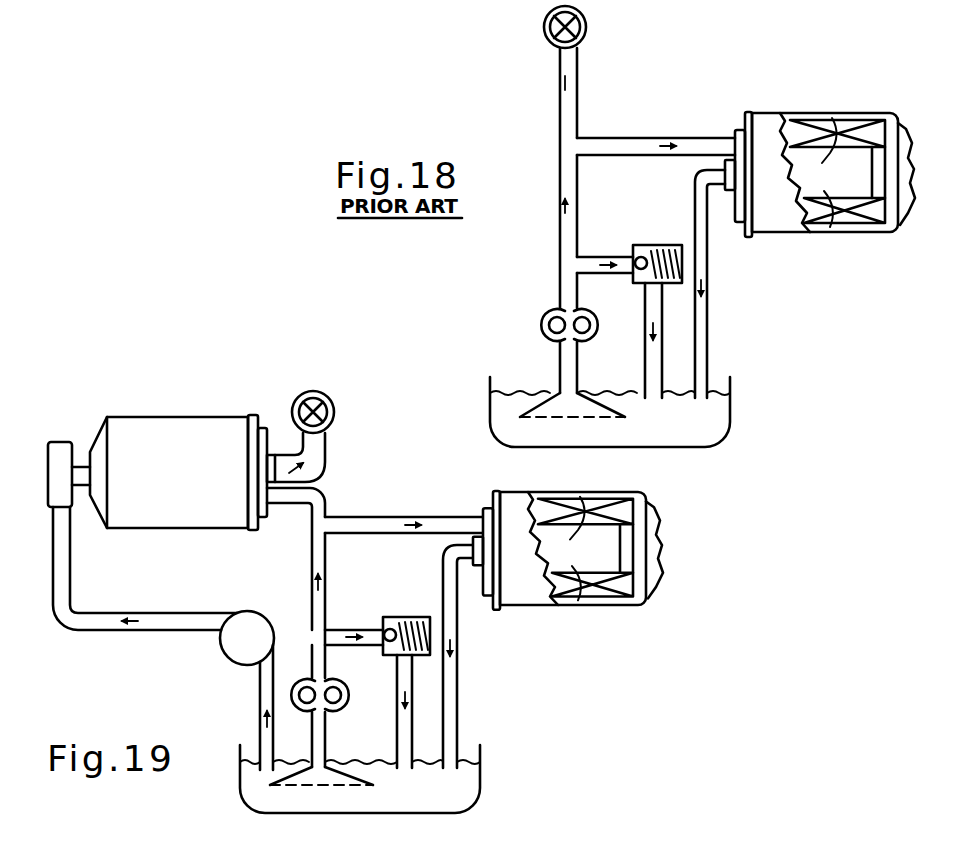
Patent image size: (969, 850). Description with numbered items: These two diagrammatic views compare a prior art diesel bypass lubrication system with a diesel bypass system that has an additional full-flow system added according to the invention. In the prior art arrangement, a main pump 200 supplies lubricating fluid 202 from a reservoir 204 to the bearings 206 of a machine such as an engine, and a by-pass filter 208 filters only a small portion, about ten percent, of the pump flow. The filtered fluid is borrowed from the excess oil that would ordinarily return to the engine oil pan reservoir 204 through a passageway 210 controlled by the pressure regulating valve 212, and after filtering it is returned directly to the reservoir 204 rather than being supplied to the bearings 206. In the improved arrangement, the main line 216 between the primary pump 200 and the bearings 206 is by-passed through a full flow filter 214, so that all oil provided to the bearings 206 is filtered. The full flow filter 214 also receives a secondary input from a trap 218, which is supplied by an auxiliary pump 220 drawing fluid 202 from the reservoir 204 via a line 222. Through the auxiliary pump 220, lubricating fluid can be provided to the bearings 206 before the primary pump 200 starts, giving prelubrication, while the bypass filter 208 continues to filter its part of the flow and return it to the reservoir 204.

In FIG. 18, the main pump 200 is at (541, 322).
In FIG. 19, the main pump 200 is at (344, 701).
In FIG. 18, the lubricating fluid 202 is at (720, 413).
In FIG. 19, the lubricating fluid 202 is at (462, 785).
In FIG. 18, the reservoir 204 is at (733, 388).
In FIG. 19, the reservoir 204 is at (480, 757).
In FIG. 18, the bearings 206 is at (588, 29).
In FIG. 19, the bearings 206 is at (293, 405).
In FIG. 18, the by-pass filter 208 is at (853, 113).
In FIG. 19, the by-pass filter 208 is at (663, 558).
In FIG. 18, the passageway 210 is at (601, 248).
In FIG. 19, the passageway 210 is at (343, 627).
In FIG. 18, the pressure regulating valve 212 is at (651, 247).
In FIG. 19, the pressure regulating valve 212 is at (402, 621).
In FIG. 19, the full flow filter 214 is at (191, 417).
In FIG. 19, the main line 216 is at (310, 557).
In FIG. 19, the trap 218 is at (60, 447).
In FIG. 19, the auxiliary pump 220 is at (228, 654).
In FIG. 19, the line 222 is at (258, 697).